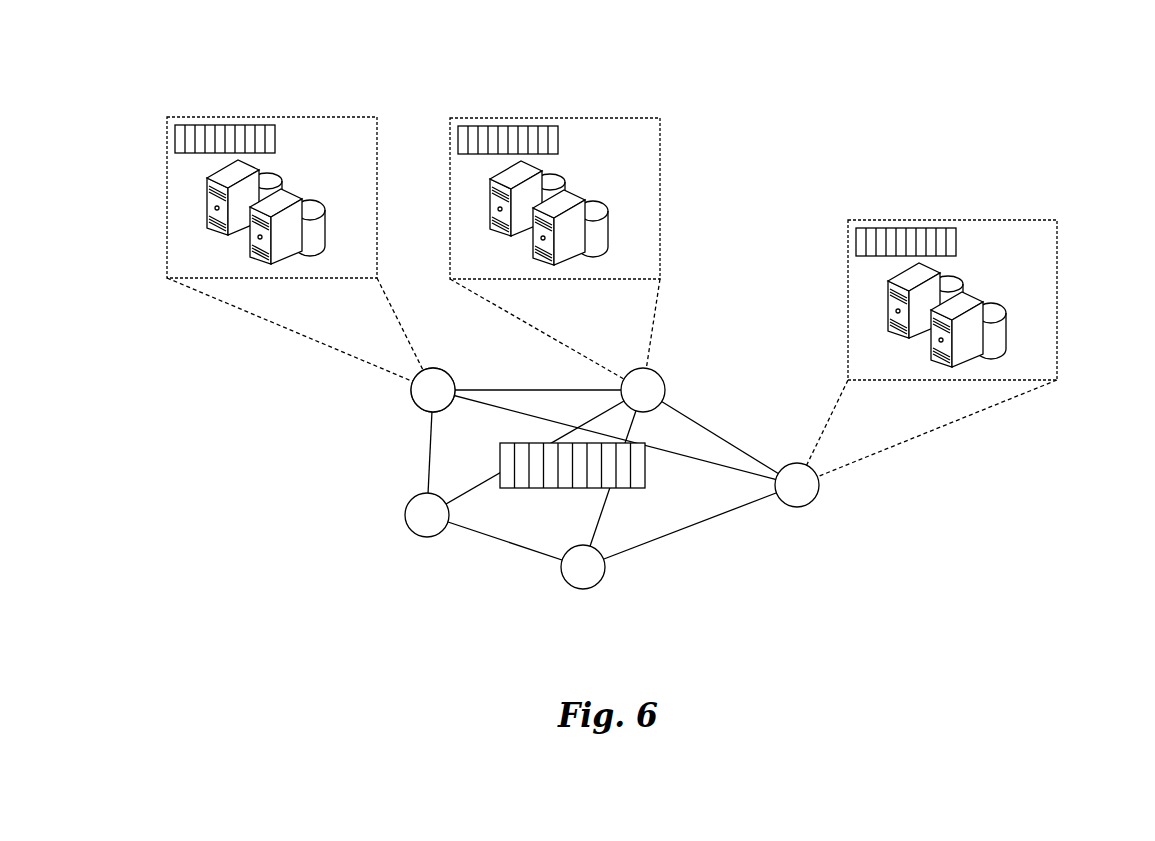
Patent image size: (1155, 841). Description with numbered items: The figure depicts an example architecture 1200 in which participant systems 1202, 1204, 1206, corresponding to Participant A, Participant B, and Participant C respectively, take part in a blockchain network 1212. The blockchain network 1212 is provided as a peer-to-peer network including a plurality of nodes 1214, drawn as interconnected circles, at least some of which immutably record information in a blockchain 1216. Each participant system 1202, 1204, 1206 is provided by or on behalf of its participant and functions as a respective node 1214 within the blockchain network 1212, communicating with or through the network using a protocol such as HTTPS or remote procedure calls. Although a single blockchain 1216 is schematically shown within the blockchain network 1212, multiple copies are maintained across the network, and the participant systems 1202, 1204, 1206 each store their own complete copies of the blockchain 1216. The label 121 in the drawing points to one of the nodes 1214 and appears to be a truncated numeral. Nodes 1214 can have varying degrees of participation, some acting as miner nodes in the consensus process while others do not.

The example architecture 1200 is at (1012, 90).
The participant system 1202 is at (367, 116).
The participant system 1204 is at (659, 133).
The participant system 1206 is at (1056, 240).
The blockchain network 1212 is at (345, 383).
The node 1214 is at (665, 387).
The blockchain 1216 is at (275, 138).
The network node 121 is at (455, 366).